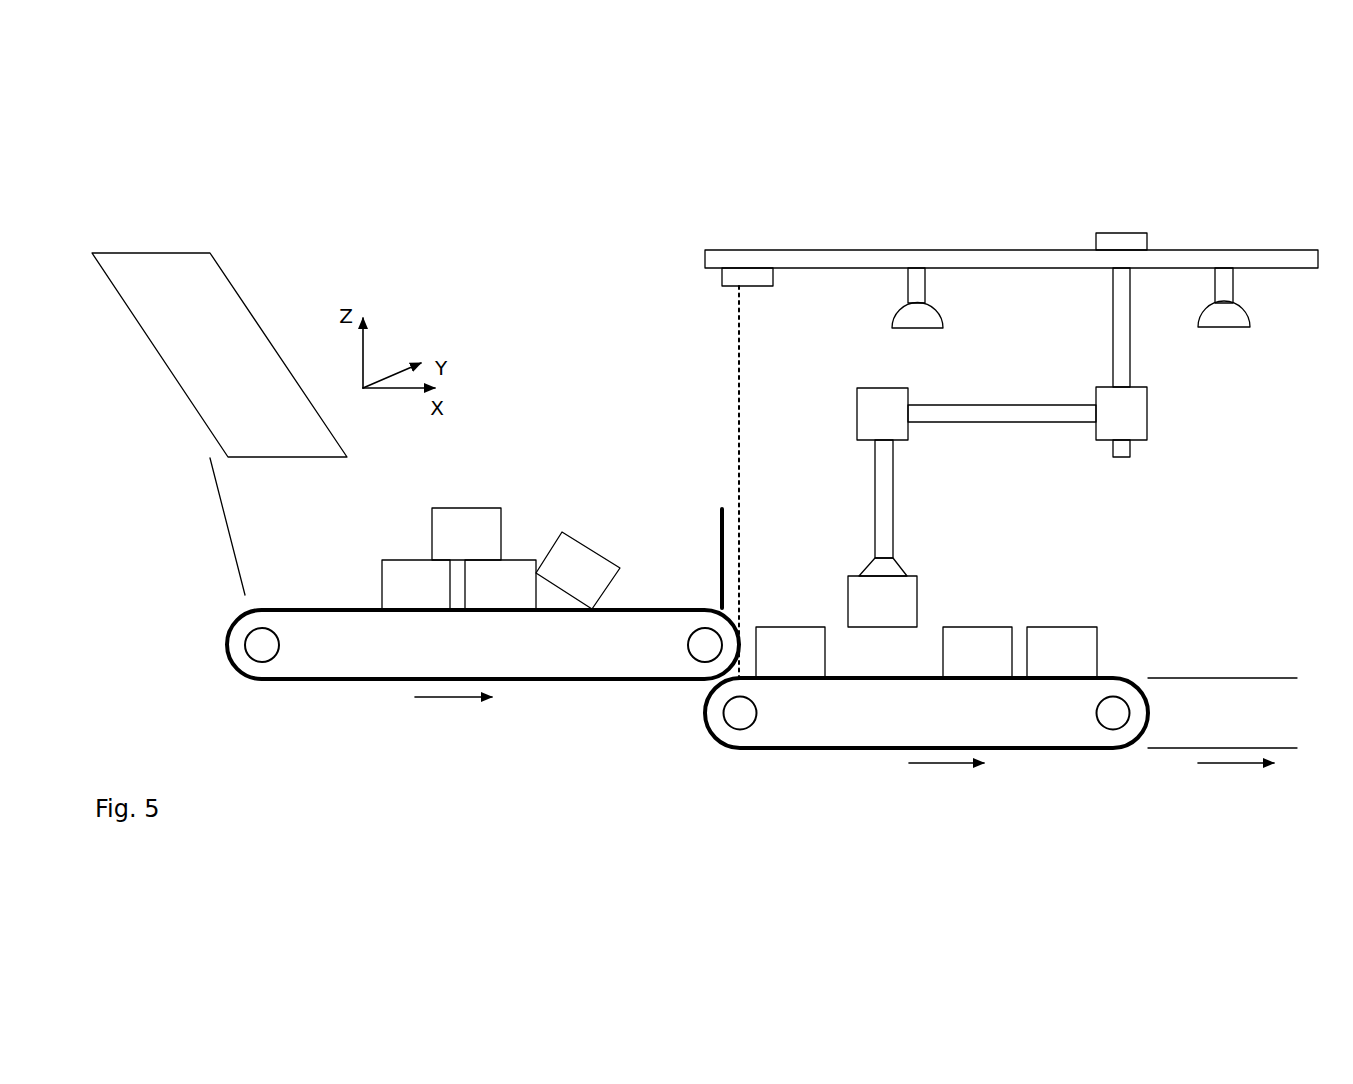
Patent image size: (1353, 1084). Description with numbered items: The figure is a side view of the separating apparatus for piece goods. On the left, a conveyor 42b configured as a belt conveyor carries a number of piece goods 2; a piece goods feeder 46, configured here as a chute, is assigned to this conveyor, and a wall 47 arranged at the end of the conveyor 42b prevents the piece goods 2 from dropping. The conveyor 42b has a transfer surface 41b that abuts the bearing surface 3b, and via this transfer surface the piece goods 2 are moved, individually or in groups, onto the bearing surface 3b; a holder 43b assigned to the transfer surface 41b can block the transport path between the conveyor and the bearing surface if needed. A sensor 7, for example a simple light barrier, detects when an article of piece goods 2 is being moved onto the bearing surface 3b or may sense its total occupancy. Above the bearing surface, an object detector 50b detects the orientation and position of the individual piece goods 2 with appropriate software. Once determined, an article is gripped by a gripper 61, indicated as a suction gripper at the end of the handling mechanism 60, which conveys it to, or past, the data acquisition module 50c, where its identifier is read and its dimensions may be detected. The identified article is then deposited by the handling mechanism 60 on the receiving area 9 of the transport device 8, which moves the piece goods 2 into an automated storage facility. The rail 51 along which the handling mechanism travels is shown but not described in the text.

The piece goods 2 is at (415, 595).
The bearing surface 3b is at (1047, 712).
The sensor 7 is at (747, 275).
The transport device 8 is at (1232, 712).
The receiving area 9 is at (1198, 677).
The transfer surface 41b is at (689, 609).
The conveyor 42b is at (587, 645).
The holder 43b is at (720, 558).
The piece goods feeder 46 is at (177, 284).
The wall 47 is at (225, 526).
The object detector 50b is at (918, 315).
The data acquisition module 50c is at (1224, 313).
The guide rail 51 is at (995, 249).
The handling mechanism 60 is at (1110, 221).
The gripper 61 is at (883, 567).